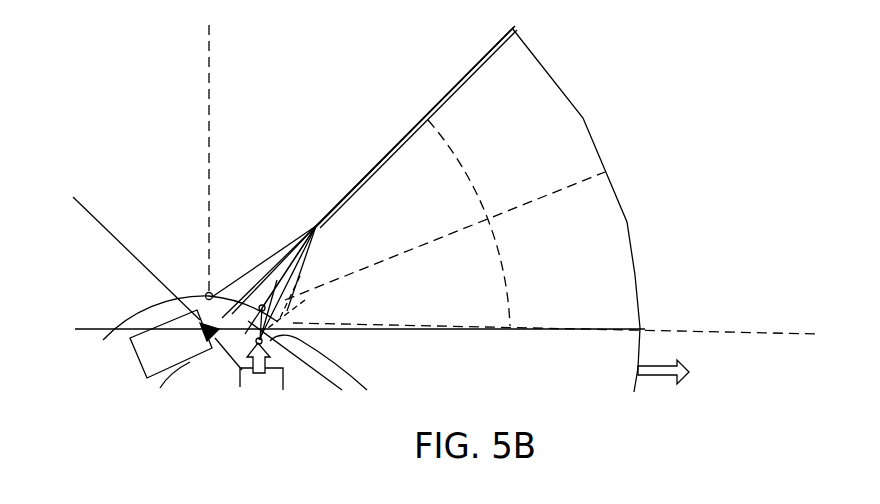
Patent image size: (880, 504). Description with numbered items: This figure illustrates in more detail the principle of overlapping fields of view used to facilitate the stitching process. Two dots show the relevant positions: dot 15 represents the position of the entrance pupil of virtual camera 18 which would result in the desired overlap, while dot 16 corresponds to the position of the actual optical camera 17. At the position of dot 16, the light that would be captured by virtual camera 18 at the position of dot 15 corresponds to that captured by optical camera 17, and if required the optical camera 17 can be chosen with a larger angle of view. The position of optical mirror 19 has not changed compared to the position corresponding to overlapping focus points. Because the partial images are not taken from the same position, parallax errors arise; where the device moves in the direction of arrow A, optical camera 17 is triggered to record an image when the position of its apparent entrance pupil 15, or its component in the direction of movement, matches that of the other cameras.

The dot 15 is at (223, 312).
The dot 16 is at (330, 352).
The optical camera 17 is at (256, 388).
The virtual camera 18 is at (148, 354).
The optical mirror 19 is at (292, 248).
The arrow A is at (660, 372).